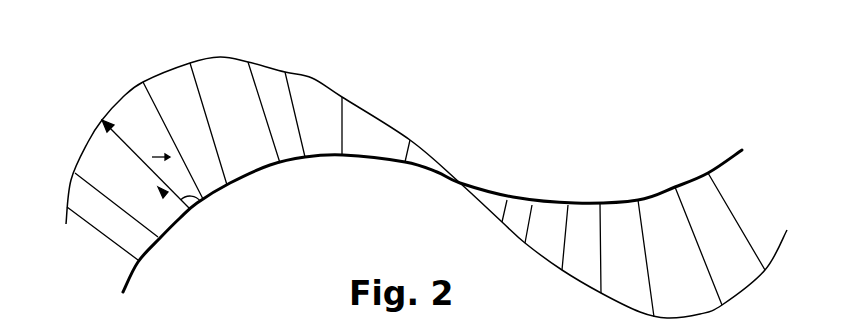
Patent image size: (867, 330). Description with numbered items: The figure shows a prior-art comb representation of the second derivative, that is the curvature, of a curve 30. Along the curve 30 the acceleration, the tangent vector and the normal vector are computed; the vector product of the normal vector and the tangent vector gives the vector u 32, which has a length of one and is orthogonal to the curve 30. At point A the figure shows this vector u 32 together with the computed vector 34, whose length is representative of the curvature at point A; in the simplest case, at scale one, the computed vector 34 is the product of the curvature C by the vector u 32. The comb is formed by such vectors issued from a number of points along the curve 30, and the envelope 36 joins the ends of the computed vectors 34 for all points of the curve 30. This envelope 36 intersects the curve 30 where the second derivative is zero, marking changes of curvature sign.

The curve 30 is at (718, 162).
The vector u 32 is at (198, 205).
The computed vector 34 is at (130, 148).
The envelope 36 is at (312, 78).